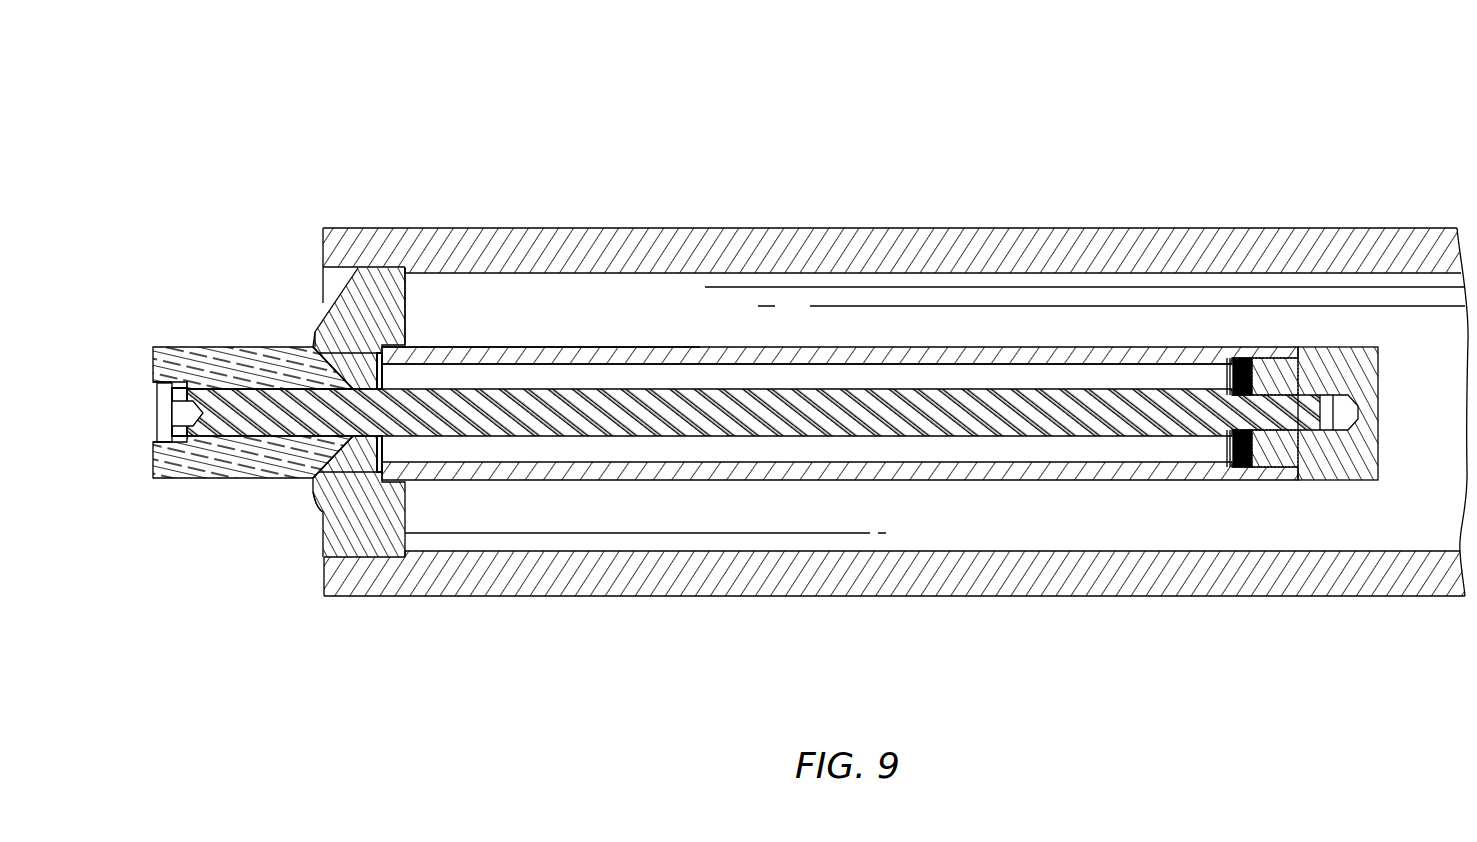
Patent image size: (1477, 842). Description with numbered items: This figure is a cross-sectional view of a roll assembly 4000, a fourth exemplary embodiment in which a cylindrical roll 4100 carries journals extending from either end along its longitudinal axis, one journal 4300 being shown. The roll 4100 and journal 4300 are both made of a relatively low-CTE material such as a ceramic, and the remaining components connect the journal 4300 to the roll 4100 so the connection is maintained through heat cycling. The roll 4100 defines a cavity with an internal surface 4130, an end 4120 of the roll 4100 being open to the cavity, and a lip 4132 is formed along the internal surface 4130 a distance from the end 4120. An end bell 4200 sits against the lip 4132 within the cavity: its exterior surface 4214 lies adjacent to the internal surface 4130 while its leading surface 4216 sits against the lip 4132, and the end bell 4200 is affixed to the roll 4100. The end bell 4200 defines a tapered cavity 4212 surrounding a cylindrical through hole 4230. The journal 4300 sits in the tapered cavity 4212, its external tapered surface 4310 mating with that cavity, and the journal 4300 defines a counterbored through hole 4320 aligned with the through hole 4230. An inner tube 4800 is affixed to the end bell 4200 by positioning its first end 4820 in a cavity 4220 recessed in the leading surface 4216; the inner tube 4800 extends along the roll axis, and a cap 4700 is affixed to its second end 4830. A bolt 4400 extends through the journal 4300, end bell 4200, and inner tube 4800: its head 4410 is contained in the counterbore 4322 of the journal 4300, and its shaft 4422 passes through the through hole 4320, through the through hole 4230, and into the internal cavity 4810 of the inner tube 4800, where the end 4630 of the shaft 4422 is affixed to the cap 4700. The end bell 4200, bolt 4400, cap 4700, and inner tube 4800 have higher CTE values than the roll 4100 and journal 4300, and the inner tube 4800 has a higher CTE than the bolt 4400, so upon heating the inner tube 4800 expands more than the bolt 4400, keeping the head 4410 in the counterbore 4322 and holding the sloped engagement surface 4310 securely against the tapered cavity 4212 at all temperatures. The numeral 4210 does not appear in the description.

The roll assembly 4000 is at (228, 98).
The cylindrical roll 4100 is at (722, 228).
The end of the roll 4120 is at (323, 237).
The internal surface 4130 is at (315, 330).
The lip 4132 is at (402, 268).
The end bell 4200 is at (343, 277).
The second bushing 4210 is at (306, 496).
The tapered cavity 4212 is at (300, 447).
The exterior surface 4214 is at (378, 268).
The leading surface 4216 is at (407, 542).
The cavity 4220 is at (457, 347).
The through hole 4230 is at (300, 358).
The journal 4300 is at (160, 347).
The external tapered surface 4310 is at (314, 494).
The counterbored through hole 4320 is at (198, 383).
The counterbore 4322 is at (153, 387).
The bolt 4400 is at (207, 478).
The head 4410 is at (153, 437).
The shaft 4422 is at (258, 380).
The end of the shaft 4630 is at (1298, 395).
The cap 4700 is at (1327, 480).
The inner tube 4800 is at (805, 347).
The internal cavity 4810 is at (860, 365).
The first end 4820 is at (405, 500).
The second end 4830 is at (1265, 347).